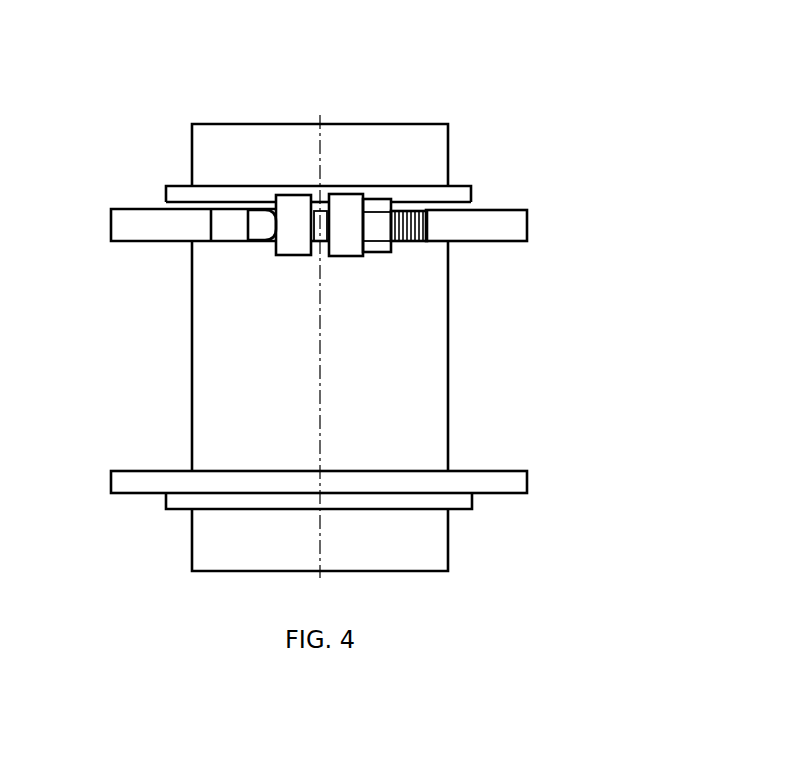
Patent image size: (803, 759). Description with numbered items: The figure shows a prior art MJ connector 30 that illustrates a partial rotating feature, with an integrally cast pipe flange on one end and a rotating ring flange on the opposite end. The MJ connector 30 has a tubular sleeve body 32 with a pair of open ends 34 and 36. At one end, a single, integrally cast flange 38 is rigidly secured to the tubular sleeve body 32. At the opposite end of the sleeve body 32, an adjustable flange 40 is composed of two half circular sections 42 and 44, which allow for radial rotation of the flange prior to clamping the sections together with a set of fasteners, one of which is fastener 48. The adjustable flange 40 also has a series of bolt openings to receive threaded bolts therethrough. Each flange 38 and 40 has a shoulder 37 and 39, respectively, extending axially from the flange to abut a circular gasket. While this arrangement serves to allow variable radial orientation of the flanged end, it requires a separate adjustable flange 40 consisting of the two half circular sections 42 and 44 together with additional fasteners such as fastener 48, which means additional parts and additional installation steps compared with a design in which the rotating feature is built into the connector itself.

The MJ connector 30 is at (492, 336).
The tubular sleeve body 32 is at (403, 420).
The open end 34 is at (348, 135).
The open end 36 is at (377, 572).
The shoulder 37 is at (472, 509).
The integrally cast flange 38 is at (527, 478).
The shoulder 39 is at (467, 192).
The adjustable flange 40 is at (527, 223).
The half circular section 42 is at (137, 218).
The half circular section 44 is at (504, 209).
The fastener 48 is at (413, 210).